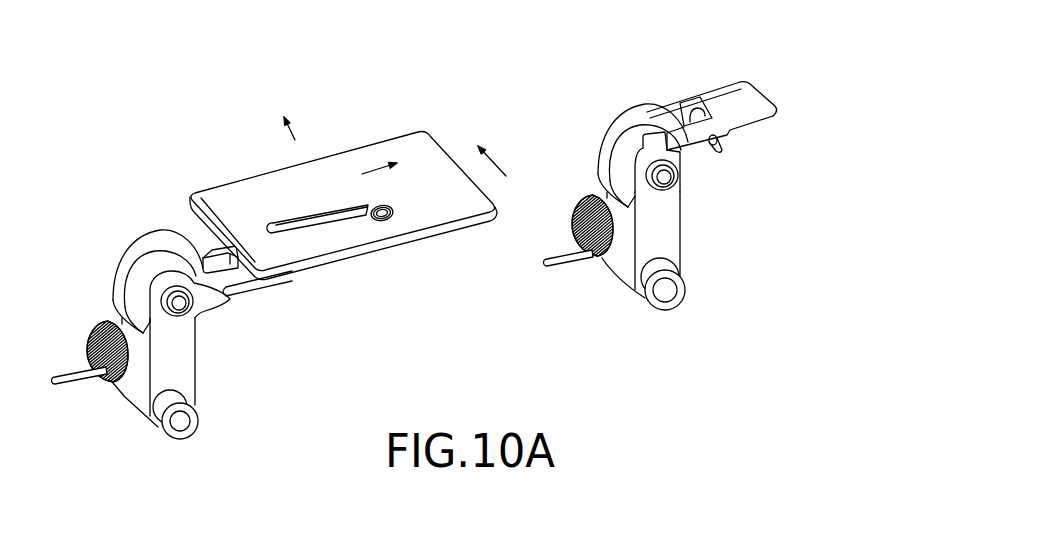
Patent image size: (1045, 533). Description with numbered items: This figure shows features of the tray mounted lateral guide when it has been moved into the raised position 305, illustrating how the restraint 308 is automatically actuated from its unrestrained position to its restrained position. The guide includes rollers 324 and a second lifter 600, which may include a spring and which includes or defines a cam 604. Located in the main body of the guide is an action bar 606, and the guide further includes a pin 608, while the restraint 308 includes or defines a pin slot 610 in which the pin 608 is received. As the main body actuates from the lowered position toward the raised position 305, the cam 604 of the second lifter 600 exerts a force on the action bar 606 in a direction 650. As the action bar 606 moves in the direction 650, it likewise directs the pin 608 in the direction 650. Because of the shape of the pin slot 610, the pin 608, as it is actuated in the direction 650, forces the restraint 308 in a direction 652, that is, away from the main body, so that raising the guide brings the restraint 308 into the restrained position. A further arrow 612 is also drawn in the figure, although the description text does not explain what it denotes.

The raised position 305 is at (806, 57).
The restraint 308 is at (343, 204).
The rollers 324 is at (130, 259).
The second lifter 600 is at (189, 372).
The cam 604 is at (216, 305).
The action bar 606 is at (277, 285).
The pin 608 is at (382, 221).
The pin slot 610 is at (321, 223).
The direction arrow 612 is at (497, 161).
The direction 650 is at (374, 177).
The direction 652 is at (296, 132).